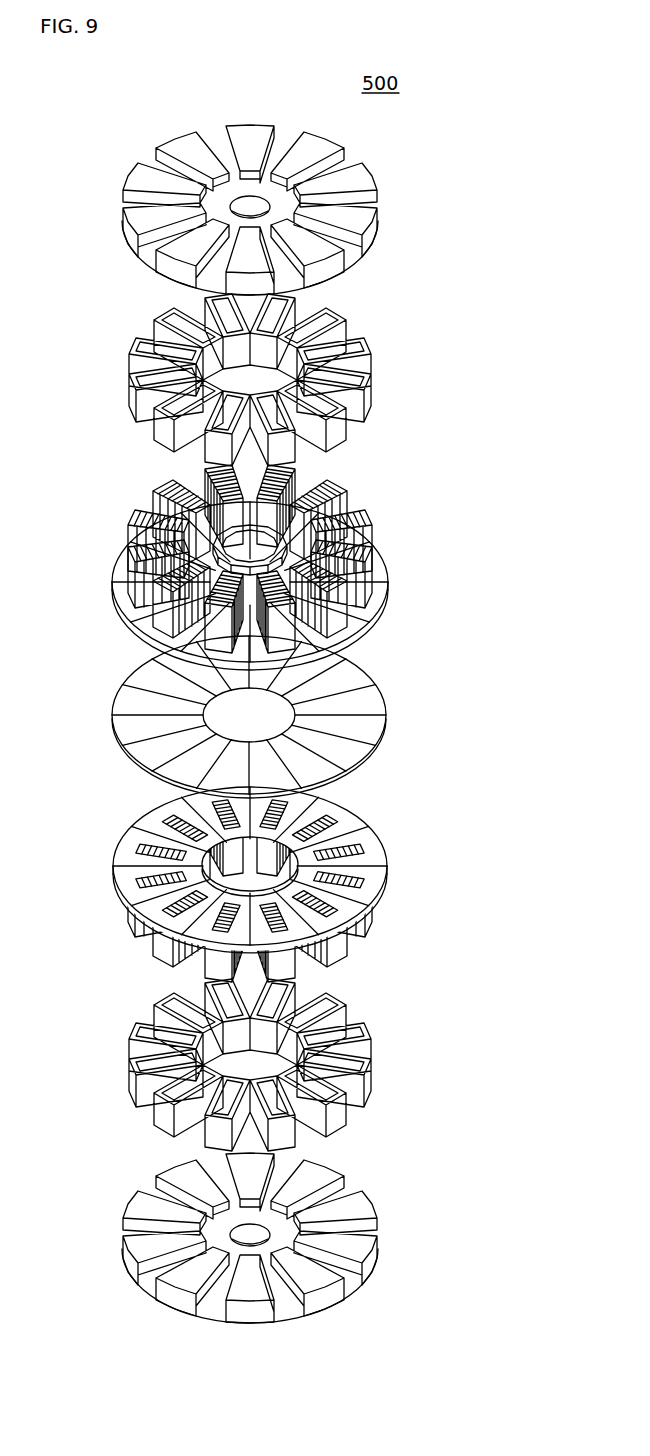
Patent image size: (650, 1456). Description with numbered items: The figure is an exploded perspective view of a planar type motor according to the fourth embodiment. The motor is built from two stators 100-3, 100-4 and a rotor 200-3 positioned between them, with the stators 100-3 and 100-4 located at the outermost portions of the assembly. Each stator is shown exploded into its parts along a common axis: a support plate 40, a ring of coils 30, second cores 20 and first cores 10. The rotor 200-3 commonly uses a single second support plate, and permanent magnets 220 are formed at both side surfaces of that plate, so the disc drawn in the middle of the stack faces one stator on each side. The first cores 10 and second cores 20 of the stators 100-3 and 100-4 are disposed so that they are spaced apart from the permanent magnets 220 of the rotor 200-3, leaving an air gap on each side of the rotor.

The support plate 40 is at (122, 205).
The coils 30 is at (135, 365).
The second cores 20 is at (135, 565).
The first cores 10 is at (122, 595).
The permanent magnets 220 is at (112, 703).
The rotor 200-3 is at (385, 697).
The stator 100-3 is at (421, 160).
The stator 100-4 is at (421, 835).